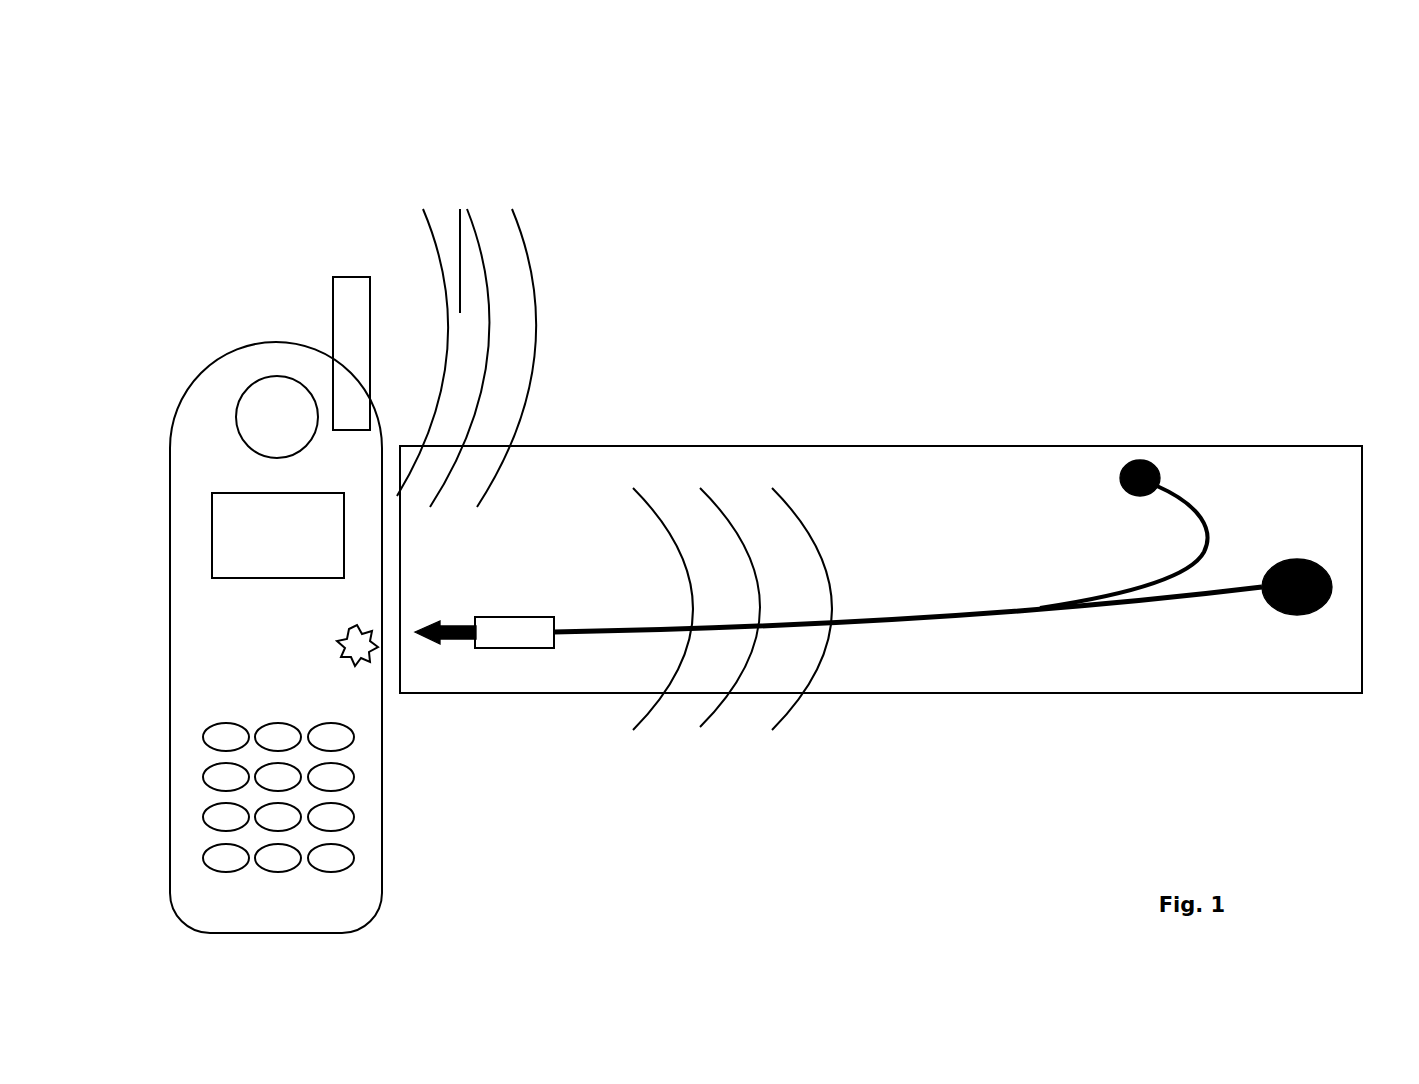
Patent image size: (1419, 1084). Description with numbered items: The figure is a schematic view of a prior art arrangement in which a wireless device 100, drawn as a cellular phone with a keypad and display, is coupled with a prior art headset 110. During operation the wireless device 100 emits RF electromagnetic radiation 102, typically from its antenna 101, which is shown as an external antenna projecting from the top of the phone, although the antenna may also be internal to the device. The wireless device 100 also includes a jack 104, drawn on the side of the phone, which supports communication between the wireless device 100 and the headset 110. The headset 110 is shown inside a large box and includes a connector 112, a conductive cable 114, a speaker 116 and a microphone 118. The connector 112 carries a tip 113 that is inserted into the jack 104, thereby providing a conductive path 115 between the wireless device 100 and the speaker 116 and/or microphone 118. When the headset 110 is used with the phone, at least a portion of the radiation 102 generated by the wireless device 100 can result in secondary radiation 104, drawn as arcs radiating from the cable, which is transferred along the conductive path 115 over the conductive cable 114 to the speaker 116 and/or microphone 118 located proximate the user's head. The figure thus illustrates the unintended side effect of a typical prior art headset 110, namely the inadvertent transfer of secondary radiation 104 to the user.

The wireless device 100 is at (231, 378).
The antenna 101 is at (342, 317).
The radiation 102 is at (461, 295).
The jack 104 is at (362, 657).
The prior art headset 110 is at (881, 569).
The connector 112 is at (485, 648).
The tip 113 is at (440, 637).
The conductive cable 114 is at (897, 622).
The conductive path 115 is at (933, 618).
The speaker 116 is at (1357, 577).
The microphone 118 is at (1132, 457).